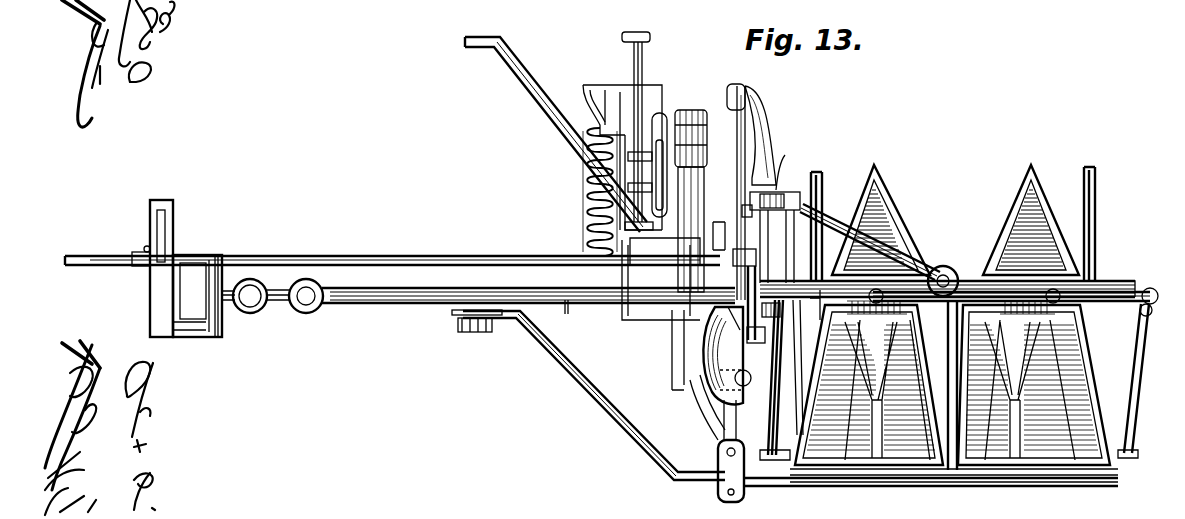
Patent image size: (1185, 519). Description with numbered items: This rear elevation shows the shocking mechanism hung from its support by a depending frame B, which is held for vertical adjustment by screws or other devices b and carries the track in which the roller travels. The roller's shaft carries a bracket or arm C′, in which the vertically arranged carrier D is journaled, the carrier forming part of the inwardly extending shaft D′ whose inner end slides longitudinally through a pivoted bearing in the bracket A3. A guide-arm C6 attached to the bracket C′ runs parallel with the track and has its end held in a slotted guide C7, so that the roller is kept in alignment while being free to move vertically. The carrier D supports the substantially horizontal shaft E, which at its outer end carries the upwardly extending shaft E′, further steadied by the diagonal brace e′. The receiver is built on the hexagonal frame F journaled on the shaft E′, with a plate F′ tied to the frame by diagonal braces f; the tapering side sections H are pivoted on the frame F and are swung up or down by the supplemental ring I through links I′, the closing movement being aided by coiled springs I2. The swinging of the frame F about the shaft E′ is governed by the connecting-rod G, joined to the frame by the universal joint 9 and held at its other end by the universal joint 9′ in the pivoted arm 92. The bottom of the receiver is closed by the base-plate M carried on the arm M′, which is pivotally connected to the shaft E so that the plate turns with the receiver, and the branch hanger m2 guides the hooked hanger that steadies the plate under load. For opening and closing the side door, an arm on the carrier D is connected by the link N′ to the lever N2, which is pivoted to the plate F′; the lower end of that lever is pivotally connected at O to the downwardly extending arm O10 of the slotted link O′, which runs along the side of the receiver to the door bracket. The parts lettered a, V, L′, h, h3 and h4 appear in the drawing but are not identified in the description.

The bracket A3 is at (174, 209).
The set screw a is at (145, 250).
The inwardly-extending shaft D′ is at (270, 262).
The universal joint 9′ is at (322, 286).
The arm 92 is at (258, 312).
The connecting-rod G is at (506, 288).
The horizontal shaft E is at (595, 306).
The supporting-arm M′ is at (790, 398).
The base-plate M is at (743, 438).
The spring V is at (581, 192).
The lever L′ is at (582, 190).
The screws b is at (643, 64).
The depending frame B is at (655, 90).
The guide-arm C6 is at (667, 125).
The bracket or arm C′ is at (707, 133).
The slotted guide C7 is at (670, 180).
The carrier D is at (665, 243).
The lever N2 is at (748, 114).
The link N′ is at (770, 133).
The upwardly-extending shaft E′ is at (773, 237).
The diagonal brace e′ is at (784, 172).
The pin h is at (727, 240).
The link O′ is at (749, 296).
The pivotal connection O is at (766, 335).
The downwardly-extending arm O10 is at (776, 380).
The cam h3 is at (727, 355).
The cam arm h4 is at (733, 324).
The branch hanger m2 is at (708, 405).
The plate F′ is at (803, 210).
The diagonal braces f is at (822, 222).
The universal joint 9 is at (950, 270).
The receiver sections H is at (952, 317).
The supplemental ring I is at (1128, 290).
The hexagonal frame F is at (1108, 282).
The links I′ is at (1140, 392).
The coiled springs I2 is at (1066, 352).